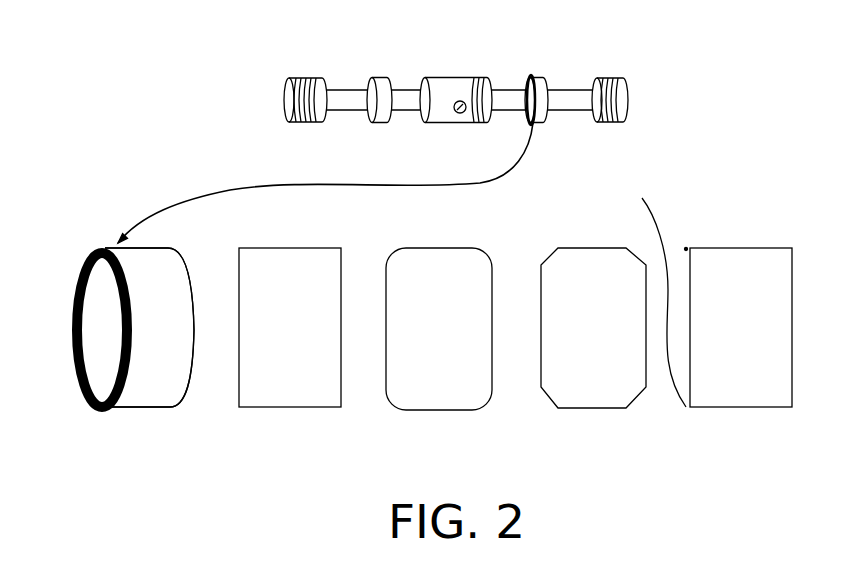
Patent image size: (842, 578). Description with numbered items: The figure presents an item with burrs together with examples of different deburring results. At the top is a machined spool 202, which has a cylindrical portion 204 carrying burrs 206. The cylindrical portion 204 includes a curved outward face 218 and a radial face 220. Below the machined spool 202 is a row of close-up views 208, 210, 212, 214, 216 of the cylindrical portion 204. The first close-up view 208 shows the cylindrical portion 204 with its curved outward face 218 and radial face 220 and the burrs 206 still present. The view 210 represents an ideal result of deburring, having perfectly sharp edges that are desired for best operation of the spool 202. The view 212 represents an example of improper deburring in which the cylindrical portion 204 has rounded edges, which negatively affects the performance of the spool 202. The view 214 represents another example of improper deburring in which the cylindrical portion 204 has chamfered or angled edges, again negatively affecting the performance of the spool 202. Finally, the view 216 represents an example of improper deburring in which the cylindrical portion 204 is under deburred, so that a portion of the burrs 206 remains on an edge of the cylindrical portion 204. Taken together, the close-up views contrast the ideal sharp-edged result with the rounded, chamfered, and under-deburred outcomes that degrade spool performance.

The machined spool 202 is at (325, 52).
The cylindrical portion 204 is at (547, 72).
The burrs 206 is at (528, 72).
The close-up view of cylindrical portion 208 is at (188, 411).
The ideal deburring result 210 is at (346, 411).
The improper deburring result with rounded edges 212 is at (484, 411).
The improper deburring result with chamfered edges 214 is at (633, 409).
The under deburred result 216 is at (750, 409).
The curved outward face 218 is at (155, 248).
The radial face 220 is at (96, 318).